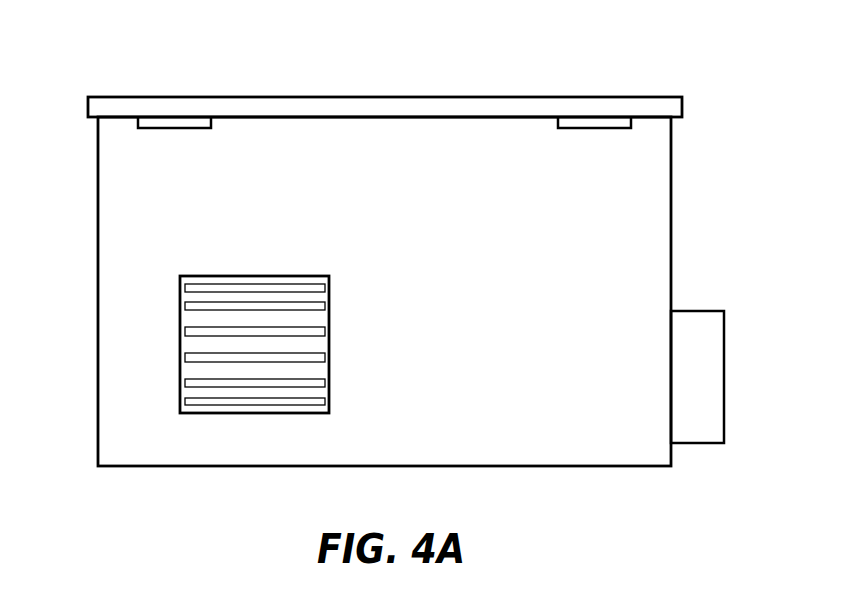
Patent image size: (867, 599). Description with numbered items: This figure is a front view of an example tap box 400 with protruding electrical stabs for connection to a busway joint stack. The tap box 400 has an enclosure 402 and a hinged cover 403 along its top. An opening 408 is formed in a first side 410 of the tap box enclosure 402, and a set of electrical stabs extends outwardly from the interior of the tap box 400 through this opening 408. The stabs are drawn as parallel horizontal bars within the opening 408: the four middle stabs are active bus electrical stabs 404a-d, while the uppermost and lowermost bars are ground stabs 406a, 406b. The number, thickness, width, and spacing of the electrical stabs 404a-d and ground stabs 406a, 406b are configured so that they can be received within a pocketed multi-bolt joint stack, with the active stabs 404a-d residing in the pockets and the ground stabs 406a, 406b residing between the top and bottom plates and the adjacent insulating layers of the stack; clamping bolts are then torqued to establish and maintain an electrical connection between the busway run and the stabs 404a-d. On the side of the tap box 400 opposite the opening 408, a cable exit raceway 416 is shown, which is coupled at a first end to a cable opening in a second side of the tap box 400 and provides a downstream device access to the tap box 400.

The tap box 400 is at (224, 58).
The enclosure 402 is at (98, 251).
The cover 403 is at (495, 92).
The electrical stabs 404a-d is at (337, 297).
The ground stab 406a is at (268, 285).
The ground stab 406b is at (278, 405).
The opening 408 is at (205, 278).
The first side 410 is at (565, 400).
The cable exit raceway 416 is at (689, 443).